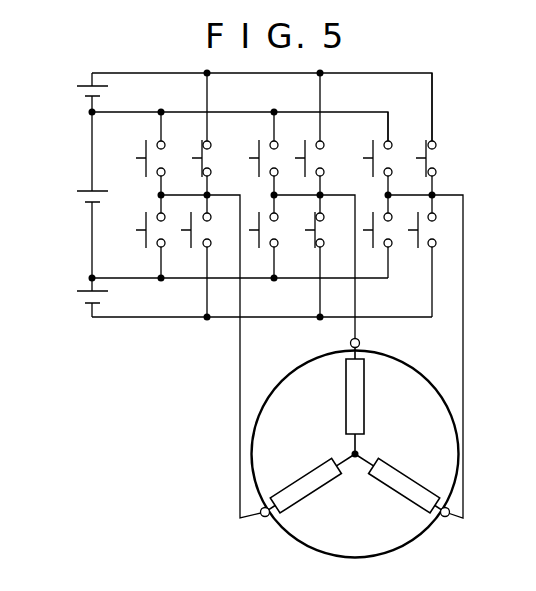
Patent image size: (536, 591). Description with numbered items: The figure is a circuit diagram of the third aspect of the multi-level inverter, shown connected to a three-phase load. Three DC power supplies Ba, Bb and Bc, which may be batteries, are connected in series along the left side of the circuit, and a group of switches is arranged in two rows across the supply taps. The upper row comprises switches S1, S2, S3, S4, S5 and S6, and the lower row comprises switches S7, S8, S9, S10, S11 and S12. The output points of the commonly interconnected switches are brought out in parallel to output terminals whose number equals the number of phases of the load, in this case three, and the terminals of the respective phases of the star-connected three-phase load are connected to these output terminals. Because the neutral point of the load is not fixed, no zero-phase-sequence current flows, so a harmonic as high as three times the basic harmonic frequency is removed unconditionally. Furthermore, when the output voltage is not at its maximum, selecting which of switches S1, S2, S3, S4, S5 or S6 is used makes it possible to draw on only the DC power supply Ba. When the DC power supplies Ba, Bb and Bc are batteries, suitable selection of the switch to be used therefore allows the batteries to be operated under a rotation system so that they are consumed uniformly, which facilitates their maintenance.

The DC power supply Ba is at (72, 92).
The DC power supply Bb is at (72, 195).
The DC power supply Bc is at (72, 296).
The switch S1 is at (150, 153).
The switch S2 is at (193, 134).
The switch S3 is at (248, 153).
The switch S4 is at (302, 134).
The switch S5 is at (361, 153).
The switch S6 is at (415, 134).
The switch S7 is at (135, 236).
The switch S8 is at (190, 256).
The switch S9 is at (260, 237).
The switch S10 is at (304, 256).
The switch S11 is at (376, 236).
The switch S12 is at (417, 256).